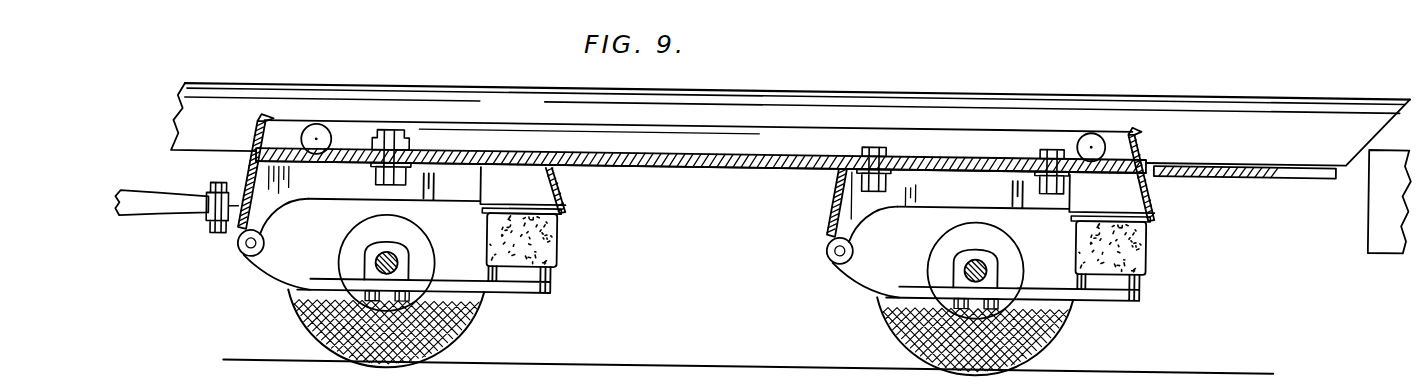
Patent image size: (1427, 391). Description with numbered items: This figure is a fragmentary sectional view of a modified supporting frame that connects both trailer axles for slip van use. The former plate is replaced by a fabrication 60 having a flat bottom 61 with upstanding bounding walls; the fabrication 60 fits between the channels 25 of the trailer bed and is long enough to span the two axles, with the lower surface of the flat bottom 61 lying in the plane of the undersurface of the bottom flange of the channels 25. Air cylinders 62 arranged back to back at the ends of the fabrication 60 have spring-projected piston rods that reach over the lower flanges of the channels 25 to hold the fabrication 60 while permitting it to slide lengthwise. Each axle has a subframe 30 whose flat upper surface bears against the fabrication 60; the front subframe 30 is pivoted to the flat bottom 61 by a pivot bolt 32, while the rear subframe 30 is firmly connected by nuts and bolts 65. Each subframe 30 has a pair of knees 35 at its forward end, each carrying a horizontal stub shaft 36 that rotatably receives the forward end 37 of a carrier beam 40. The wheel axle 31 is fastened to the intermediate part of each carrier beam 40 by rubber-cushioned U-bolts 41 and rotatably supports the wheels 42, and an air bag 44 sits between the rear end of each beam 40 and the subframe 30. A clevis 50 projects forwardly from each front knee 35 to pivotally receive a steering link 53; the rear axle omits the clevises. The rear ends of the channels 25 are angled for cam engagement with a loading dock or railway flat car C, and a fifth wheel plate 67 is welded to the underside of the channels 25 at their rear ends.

The channel 25 is at (818, 99).
The subframe 30 is at (576, 185).
The wheel axle 31 is at (399, 251).
The pivot bolt 32 is at (392, 126).
The knee 35 is at (247, 169).
The stub shaft 36 is at (246, 251).
The forward end of carrier beam 37 is at (270, 272).
The carrier beam 40 is at (520, 295).
The U-bolt 41 is at (366, 256).
The wheel 42 is at (317, 313).
The air bag 44 is at (545, 238).
The clevis 50 is at (205, 234).
The steering link 53 is at (133, 205).
The fabrication 60 is at (758, 169).
The flat bottom 61 is at (708, 161).
The air cylinder 62 is at (315, 130).
The nuts and bolts 65 is at (875, 139).
The fifth wheel plate 67 is at (1258, 164).
The railway flat car C is at (1370, 210).